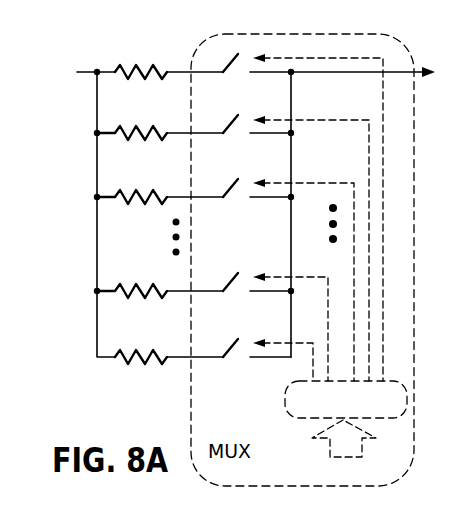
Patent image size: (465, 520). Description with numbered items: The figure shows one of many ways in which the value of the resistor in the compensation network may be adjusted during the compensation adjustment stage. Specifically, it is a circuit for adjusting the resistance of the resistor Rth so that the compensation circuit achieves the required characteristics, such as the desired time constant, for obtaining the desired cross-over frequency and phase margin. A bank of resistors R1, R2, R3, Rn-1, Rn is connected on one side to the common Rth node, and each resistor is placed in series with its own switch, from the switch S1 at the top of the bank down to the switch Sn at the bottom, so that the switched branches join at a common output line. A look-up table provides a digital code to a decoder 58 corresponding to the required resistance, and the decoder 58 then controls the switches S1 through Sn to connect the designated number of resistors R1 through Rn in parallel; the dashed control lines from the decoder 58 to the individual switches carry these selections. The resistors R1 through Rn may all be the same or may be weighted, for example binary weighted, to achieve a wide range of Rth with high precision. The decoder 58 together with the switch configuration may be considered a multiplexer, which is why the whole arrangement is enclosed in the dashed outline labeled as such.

The decoder 58 is at (285, 403).
The resistor Rth is at (78, 71).
The resistor R1 is at (169, 55).
The resistor R2 is at (160, 118).
The resistor R3 is at (160, 183).
The resistor Rn-1 is at (160, 275).
The resistor Rn is at (169, 341).
The switch S1 is at (235, 56).
The switch Sn is at (235, 345).